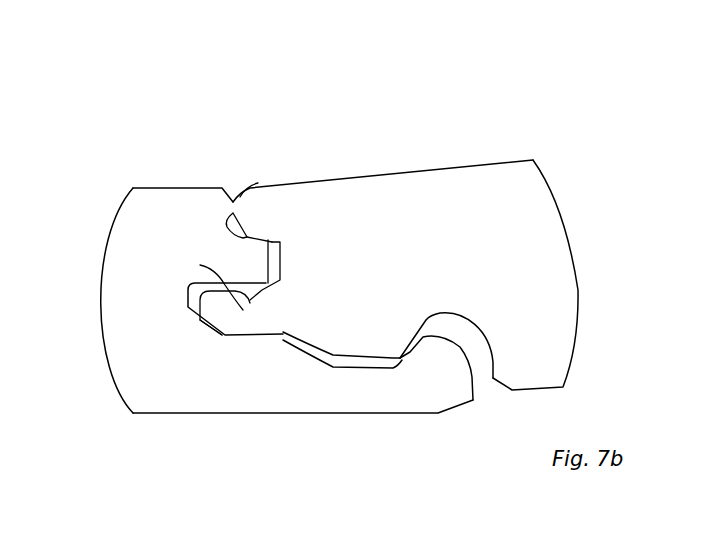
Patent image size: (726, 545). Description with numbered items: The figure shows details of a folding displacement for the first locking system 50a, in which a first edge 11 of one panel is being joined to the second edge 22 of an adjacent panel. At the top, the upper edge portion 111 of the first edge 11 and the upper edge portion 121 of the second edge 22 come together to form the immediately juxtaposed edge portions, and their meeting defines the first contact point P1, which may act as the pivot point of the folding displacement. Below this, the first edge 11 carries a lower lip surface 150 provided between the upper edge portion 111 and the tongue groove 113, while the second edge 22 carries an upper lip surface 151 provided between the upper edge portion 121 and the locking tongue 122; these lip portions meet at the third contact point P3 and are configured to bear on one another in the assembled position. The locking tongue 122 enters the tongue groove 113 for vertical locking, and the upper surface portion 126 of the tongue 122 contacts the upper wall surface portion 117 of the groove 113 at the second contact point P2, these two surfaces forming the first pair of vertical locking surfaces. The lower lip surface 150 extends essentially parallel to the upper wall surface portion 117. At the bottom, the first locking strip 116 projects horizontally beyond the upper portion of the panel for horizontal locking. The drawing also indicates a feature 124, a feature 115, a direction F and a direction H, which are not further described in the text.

The first locking system 50a is at (92, 148).
The first edge 11 is at (178, 182).
The second edge 22 is at (477, 150).
The first locking strip 116 is at (330, 430).
The outer hook portion 124 is at (426, 320).
The inner hook / rib portion 115 is at (400, 360).
The upper edge portion 121 is at (258, 183).
The upper edge portion 111 is at (226, 213).
The first contact point P1 is at (238, 212).
The upper lip surface 151 is at (250, 236).
The third contact point P3 is at (280, 244).
The lower lip surface 150 is at (246, 270).
The upper wall surface portion 117 is at (204, 281).
The tongue groove 113 is at (189, 297).
The upper surface portion 126 is at (237, 313).
The second contact point P2 is at (270, 292).
The locking tongue 122 is at (222, 318).
The forward direction F is at (596, 103).
The horizontal direction H is at (17, 479).